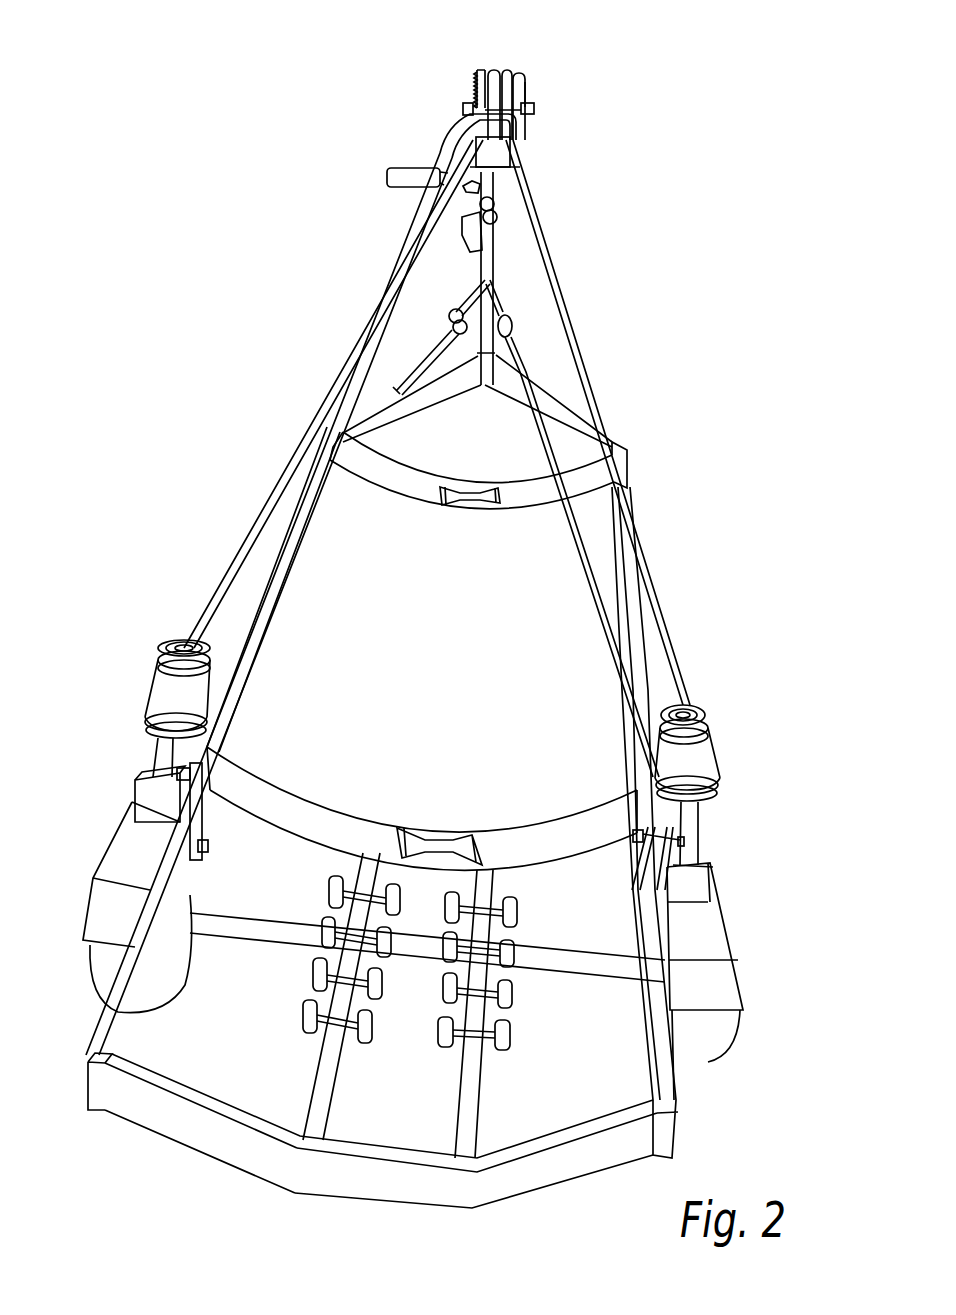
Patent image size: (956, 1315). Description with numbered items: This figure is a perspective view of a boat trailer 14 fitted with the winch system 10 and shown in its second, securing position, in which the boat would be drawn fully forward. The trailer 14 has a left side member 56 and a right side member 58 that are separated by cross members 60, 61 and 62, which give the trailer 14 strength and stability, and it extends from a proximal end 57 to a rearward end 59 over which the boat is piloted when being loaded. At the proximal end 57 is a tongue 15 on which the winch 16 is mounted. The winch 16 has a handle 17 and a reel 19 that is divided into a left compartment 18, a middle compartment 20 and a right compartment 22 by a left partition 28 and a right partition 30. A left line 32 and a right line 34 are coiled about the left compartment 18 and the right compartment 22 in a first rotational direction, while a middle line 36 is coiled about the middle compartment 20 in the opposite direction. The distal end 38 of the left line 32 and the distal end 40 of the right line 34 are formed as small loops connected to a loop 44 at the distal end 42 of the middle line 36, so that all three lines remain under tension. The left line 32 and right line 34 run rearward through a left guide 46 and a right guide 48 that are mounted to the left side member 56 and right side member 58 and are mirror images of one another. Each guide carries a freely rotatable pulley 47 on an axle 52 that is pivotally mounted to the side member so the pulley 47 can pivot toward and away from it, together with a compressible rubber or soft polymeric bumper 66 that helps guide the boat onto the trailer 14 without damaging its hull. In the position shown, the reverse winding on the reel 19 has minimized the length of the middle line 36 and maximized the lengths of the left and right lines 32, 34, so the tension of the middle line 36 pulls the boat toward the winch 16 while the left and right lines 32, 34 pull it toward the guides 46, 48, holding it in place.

The winch system 10 is at (268, 447).
The trailer 14 is at (72, 1030).
The tongue 15 is at (497, 272).
The winch 16 is at (536, 132).
The handle 17 is at (405, 180).
The left compartment 18 is at (481, 69).
The reel 19 is at (537, 97).
The middle compartment 20 is at (495, 68).
The right compartment 22 is at (508, 68).
The left partition 28 is at (476, 92).
The right partition 30 is at (526, 80).
The left line 32 is at (405, 263).
The right line 34 is at (566, 300).
The middle line 36 is at (518, 165).
The distal end of the left line 38 is at (448, 317).
The distal end of the right line 40 is at (512, 316).
The distal end of the middle line 42 is at (394, 394).
The loop 44 is at (480, 258).
The left guide 46 is at (140, 717).
The pulley 47 is at (168, 740).
The right guide 48 is at (732, 773).
The axle 52 is at (178, 648).
The left side member 56 is at (127, 978).
The proximal end 57 is at (444, 126).
The right side member 58 is at (676, 1088).
The rearward end 59 is at (312, 1212).
The cross member 60 is at (477, 1190).
The cross member 61 is at (330, 803).
The cross member 62 is at (512, 500).
The bumper 66 is at (157, 694).